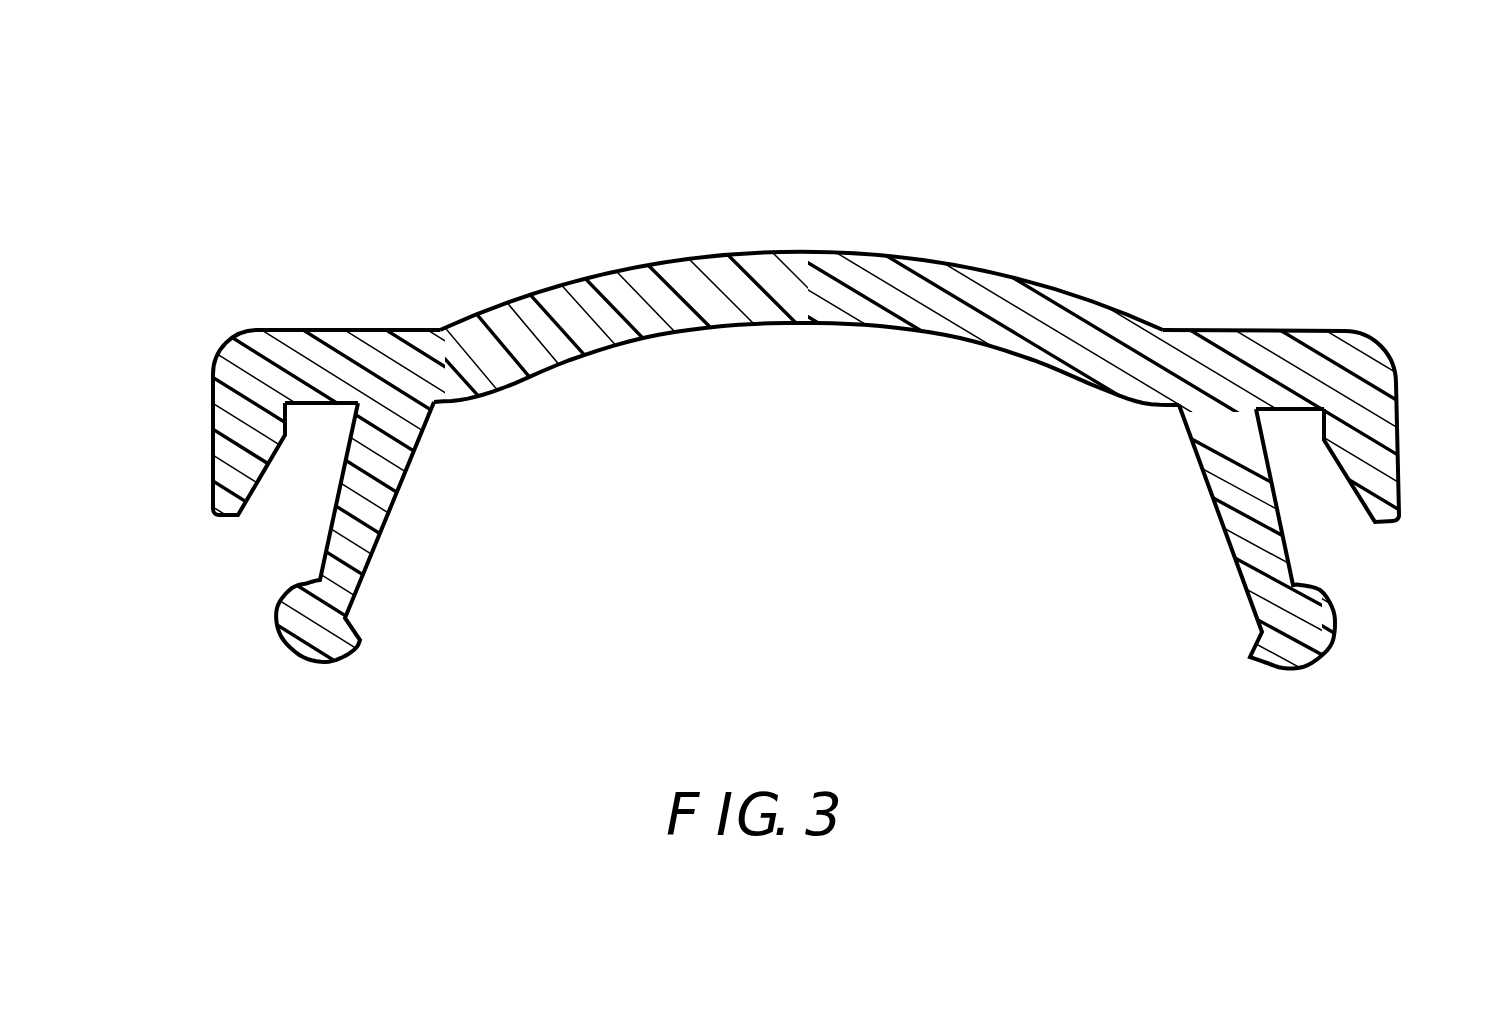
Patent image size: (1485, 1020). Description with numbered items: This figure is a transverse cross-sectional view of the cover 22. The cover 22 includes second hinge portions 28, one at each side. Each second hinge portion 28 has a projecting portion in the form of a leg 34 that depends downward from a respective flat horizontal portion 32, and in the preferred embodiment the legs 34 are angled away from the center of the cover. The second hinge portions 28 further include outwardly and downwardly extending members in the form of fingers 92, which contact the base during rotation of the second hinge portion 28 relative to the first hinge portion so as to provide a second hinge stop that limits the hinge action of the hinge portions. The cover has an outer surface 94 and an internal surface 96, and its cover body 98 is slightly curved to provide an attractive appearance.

The cover 22 is at (1138, 139).
The second hinge portion 28 is at (278, 318).
The flat horizontal portion 32 is at (357, 338).
The leg 34 is at (386, 490).
The finger 92 is at (225, 441).
The outer surface 94 is at (859, 252).
The internal surface 96 is at (903, 331).
The cover body 98 is at (753, 270).